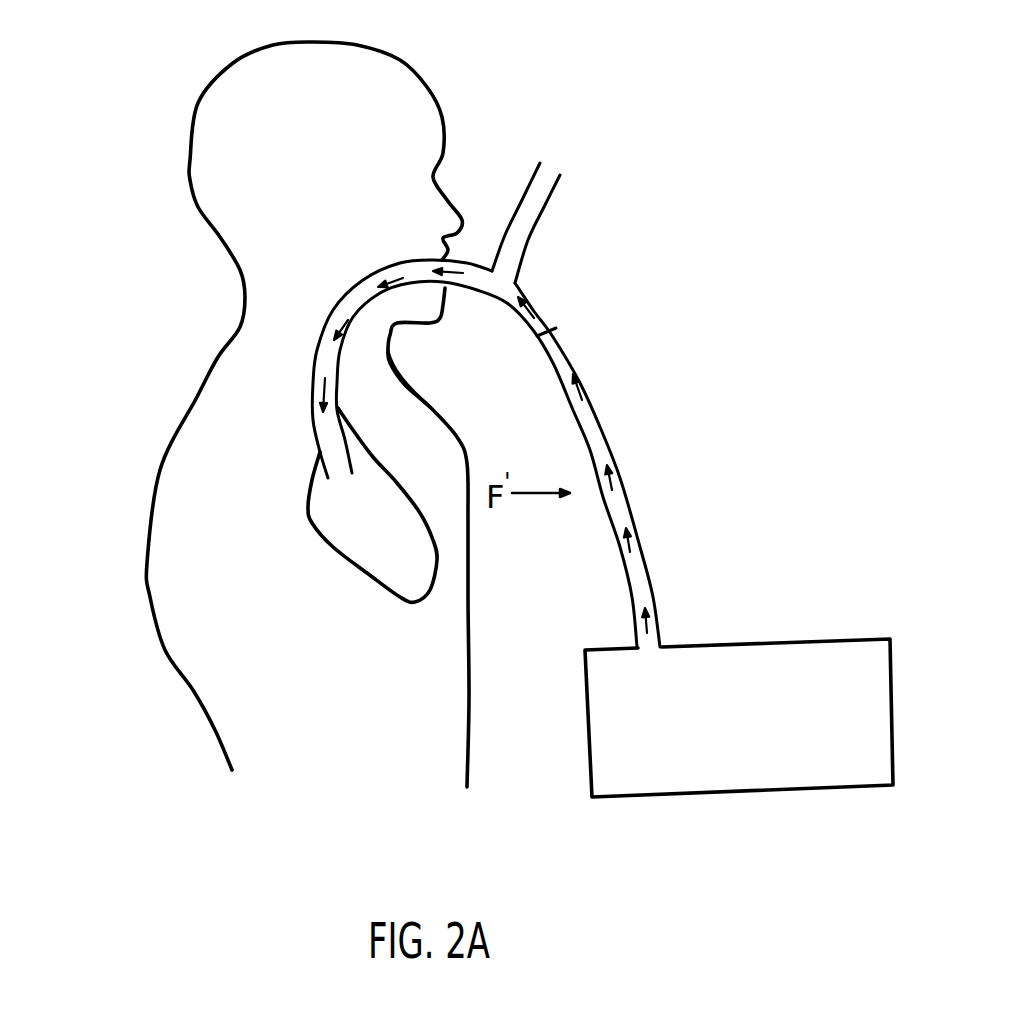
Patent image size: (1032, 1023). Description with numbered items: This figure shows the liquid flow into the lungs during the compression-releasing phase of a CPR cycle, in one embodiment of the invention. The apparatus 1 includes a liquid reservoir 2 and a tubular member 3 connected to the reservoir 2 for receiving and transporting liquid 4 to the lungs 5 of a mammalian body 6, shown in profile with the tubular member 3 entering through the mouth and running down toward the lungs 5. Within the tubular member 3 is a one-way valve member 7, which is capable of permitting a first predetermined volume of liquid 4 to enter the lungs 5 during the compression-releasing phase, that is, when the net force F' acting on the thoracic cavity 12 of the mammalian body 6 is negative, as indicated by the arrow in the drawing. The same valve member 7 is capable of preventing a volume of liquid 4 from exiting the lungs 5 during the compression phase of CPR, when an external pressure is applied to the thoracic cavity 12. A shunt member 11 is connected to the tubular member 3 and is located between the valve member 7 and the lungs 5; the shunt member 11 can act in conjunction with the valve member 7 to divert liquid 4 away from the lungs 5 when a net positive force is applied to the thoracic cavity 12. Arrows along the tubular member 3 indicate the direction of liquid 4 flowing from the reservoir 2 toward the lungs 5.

The apparatus 1 is at (752, 325).
The liquid reservoir 2 is at (752, 668).
The tubular member 3 is at (603, 423).
The liquid 4 is at (633, 583).
The lungs 5 is at (338, 511).
The mammalian body 6 is at (93, 195).
The one-way valve member 7 is at (560, 333).
The shunt member 11 is at (522, 247).
The thoracic cavity 12 is at (418, 427).